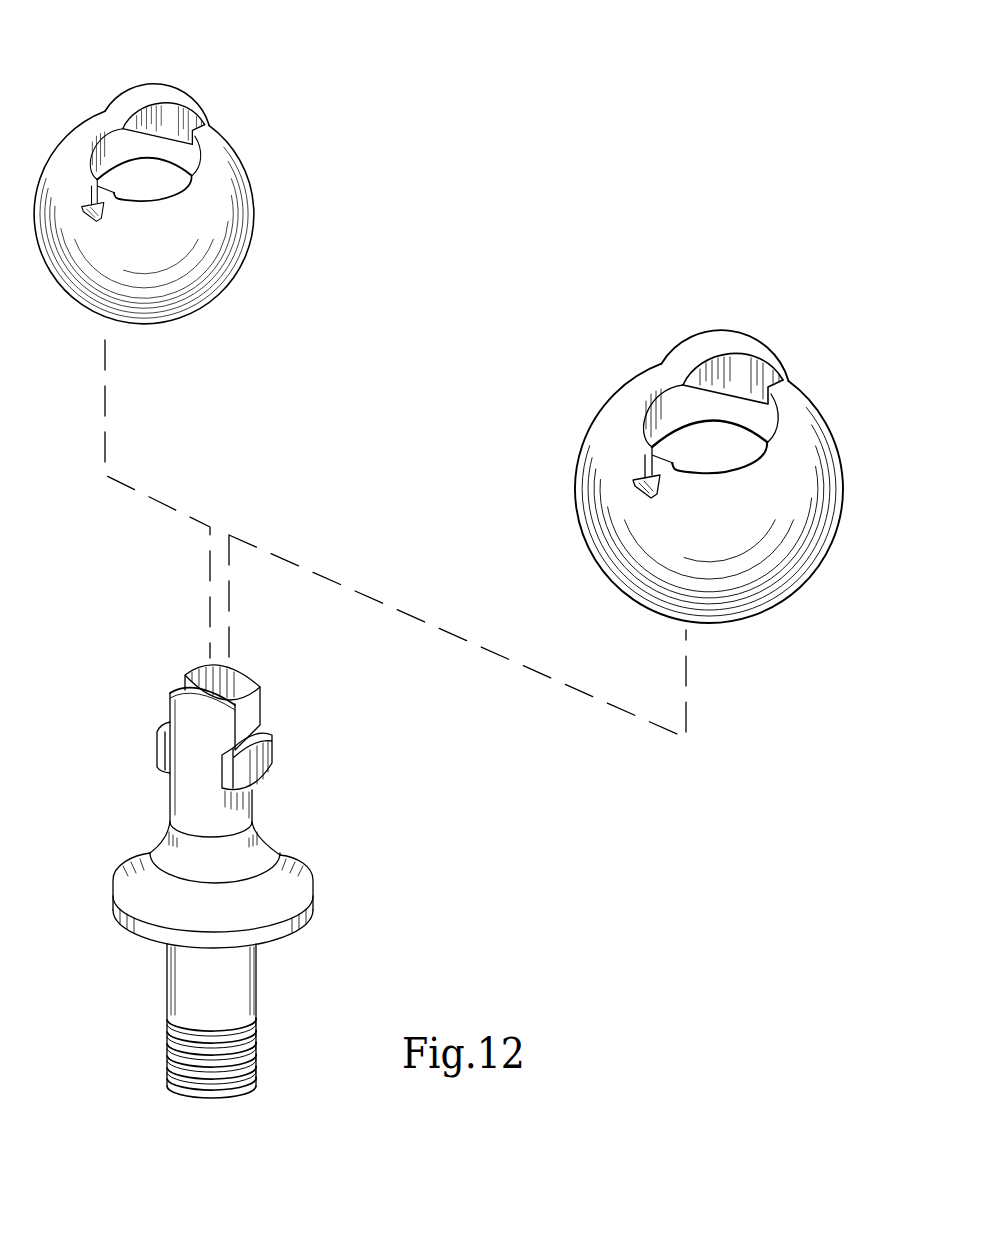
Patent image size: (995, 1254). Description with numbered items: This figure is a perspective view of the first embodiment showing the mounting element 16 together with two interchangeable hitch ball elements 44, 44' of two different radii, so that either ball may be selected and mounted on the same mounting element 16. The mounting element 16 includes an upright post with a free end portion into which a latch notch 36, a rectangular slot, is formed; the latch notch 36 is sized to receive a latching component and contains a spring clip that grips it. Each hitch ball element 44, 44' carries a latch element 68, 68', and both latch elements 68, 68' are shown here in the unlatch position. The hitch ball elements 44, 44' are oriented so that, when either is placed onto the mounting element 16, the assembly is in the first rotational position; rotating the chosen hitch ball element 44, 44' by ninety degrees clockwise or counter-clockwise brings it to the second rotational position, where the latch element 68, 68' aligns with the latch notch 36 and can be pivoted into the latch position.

The mounting element 16 is at (323, 823).
The latch notch 36 is at (235, 693).
The hitch ball element 44 is at (233, 217).
The hitch ball element 44' is at (737, 545).
The latch element 68 is at (189, 137).
The latch element 68' is at (754, 410).